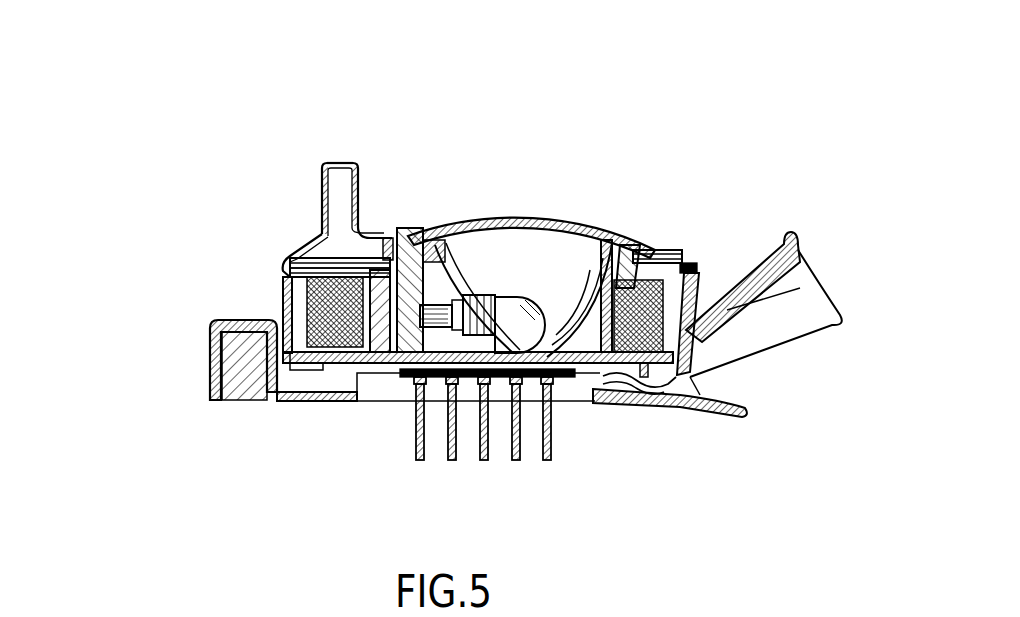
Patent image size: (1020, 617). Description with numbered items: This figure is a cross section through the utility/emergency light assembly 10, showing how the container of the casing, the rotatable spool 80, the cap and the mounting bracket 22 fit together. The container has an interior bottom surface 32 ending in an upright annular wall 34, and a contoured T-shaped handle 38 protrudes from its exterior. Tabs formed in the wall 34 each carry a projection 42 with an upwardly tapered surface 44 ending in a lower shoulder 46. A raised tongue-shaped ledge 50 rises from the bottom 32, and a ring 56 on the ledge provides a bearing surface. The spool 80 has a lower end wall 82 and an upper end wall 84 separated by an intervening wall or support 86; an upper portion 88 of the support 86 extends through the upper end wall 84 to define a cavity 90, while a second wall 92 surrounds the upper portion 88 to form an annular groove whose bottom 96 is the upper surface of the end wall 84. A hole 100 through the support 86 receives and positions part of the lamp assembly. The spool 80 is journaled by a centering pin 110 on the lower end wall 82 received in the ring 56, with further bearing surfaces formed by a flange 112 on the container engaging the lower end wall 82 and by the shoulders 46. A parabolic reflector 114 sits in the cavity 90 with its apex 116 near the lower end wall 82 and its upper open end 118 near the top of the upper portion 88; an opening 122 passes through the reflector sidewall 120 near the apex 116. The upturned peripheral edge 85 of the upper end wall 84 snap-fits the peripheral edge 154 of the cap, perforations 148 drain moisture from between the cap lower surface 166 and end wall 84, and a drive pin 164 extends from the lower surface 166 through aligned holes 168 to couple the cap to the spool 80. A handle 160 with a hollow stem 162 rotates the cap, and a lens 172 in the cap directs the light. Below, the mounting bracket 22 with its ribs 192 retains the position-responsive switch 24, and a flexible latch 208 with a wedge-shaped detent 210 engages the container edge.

The utility/emergency light assembly 10 is at (794, 89).
The mounting bracket 22 is at (333, 402).
The position-responsive switch 24 is at (230, 400).
The interior bottom surface 32 is at (642, 378).
The upright annular wall 34 is at (690, 263).
The handle 38 is at (668, 385).
The projection 42 is at (708, 351).
The upwardly tapered surface 44 is at (720, 280).
The lower shoulder 46 is at (680, 390).
The tongue-shaped ledge 50 is at (568, 378).
The ring 56 is at (500, 378).
The spool 80 is at (293, 372).
The lower end wall 82 is at (327, 358).
The upper end wall 84 is at (286, 292).
The peripheral edge 85 is at (288, 278).
The intervening wall or support 86 is at (397, 364).
The upper portion 88 is at (418, 225).
The cavity 90 is at (578, 212).
The second wall 92 is at (645, 210).
The bottom of annular groove 96 is at (688, 605).
The hole 100 is at (430, 240).
The centering pin 110 is at (472, 378).
The flange 112 is at (334, 402).
The parabolic reflector 114 is at (530, 281).
The apex 116 is at (536, 378).
The upper open end 118 is at (446, 250).
The sidewall 120 is at (547, 240).
The opening 122 is at (466, 268).
The perforations 148 is at (682, 256).
The peripheral edge 154 is at (284, 270).
The handle 160 is at (315, 166).
The stem 162 is at (322, 200).
The drive pin 164 is at (390, 226).
The lower surface 166 is at (670, 212).
The aligned holes 168 is at (285, 260).
The lens 172 is at (562, 201).
The ribs 192 is at (414, 447).
The flexible latch 208 is at (712, 433).
The wedge-shaped detent 210 is at (657, 385).